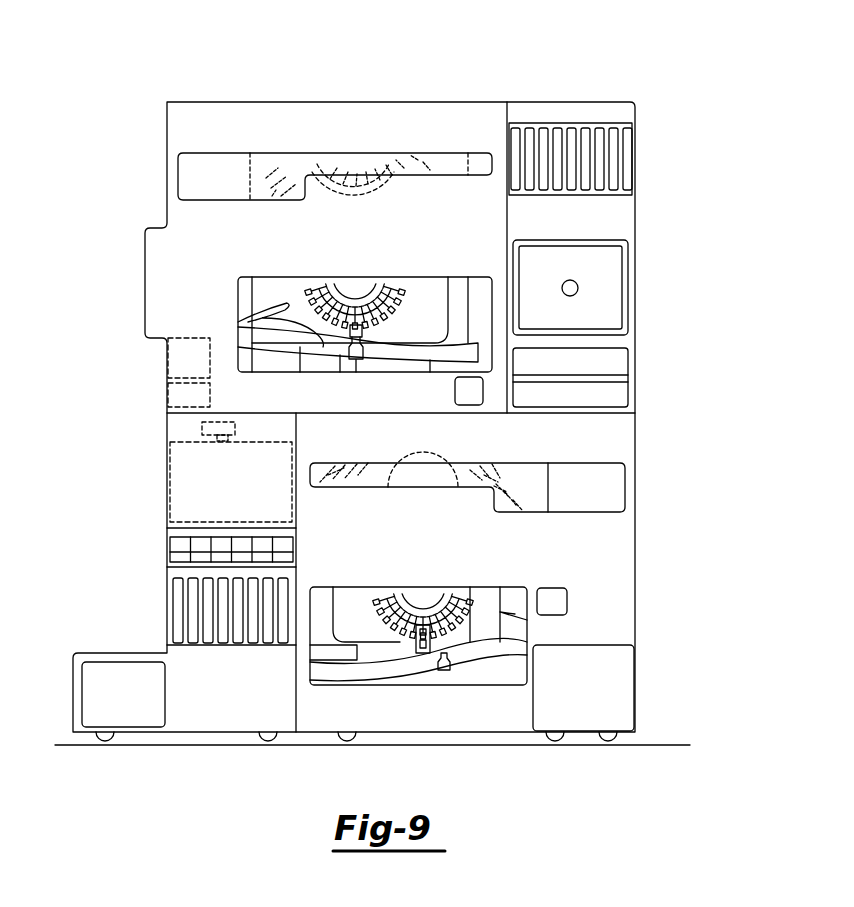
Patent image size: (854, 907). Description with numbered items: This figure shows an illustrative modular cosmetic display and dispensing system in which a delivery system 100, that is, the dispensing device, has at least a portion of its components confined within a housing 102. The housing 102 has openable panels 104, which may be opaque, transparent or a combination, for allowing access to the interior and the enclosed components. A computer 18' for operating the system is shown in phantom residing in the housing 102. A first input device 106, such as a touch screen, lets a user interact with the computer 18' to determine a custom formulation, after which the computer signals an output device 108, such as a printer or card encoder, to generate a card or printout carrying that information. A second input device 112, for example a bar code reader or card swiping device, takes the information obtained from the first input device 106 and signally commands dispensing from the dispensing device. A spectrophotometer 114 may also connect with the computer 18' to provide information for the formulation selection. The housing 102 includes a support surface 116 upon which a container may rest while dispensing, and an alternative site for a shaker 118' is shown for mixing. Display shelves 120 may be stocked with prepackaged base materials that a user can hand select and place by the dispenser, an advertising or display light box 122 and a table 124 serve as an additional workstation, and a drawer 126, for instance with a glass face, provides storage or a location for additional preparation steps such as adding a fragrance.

The delivery system 100 is at (435, 82).
The housing 102 is at (167, 172).
The openable panels 104 is at (507, 590).
The first input device 106 is at (167, 357).
The output device 108 is at (167, 390).
The second input device 112 is at (637, 342).
The spectrophotometer 114 is at (202, 425).
The support surface 116 is at (400, 668).
The shaker 118' is at (339, 322).
The display shelves 120 is at (635, 157).
The display light box 122 is at (170, 548).
The table 124 is at (583, 372).
The drawer 126 is at (597, 400).
The computer 18' is at (167, 482).